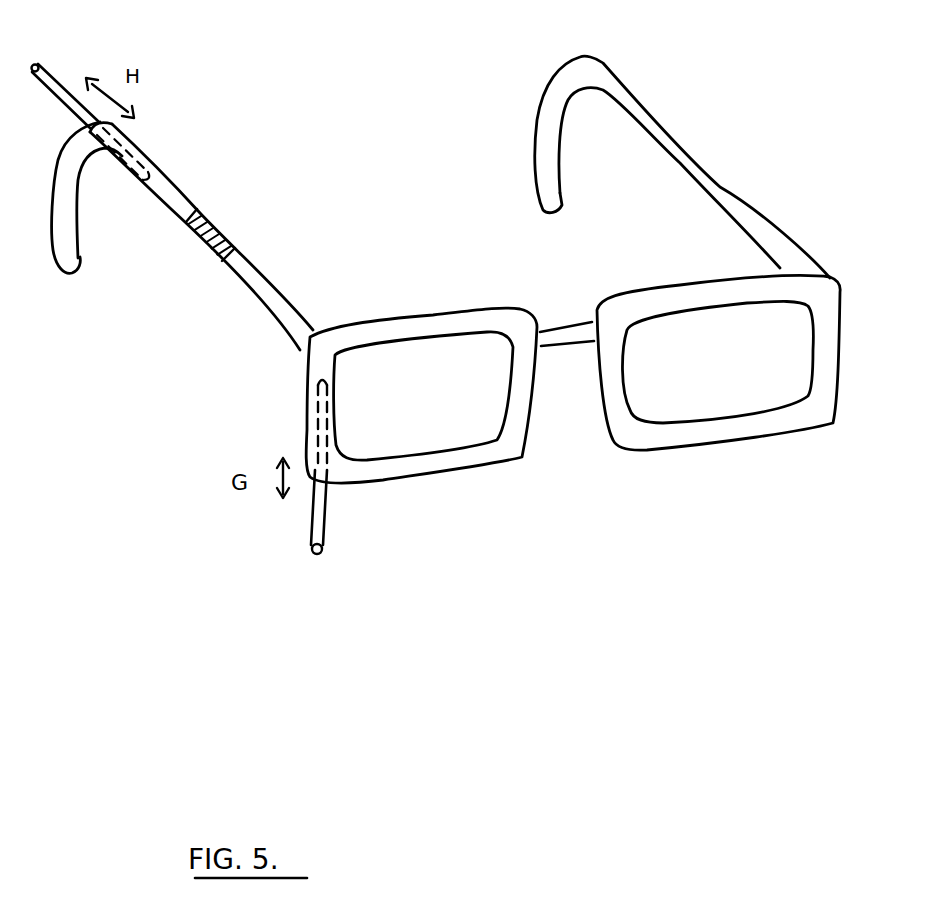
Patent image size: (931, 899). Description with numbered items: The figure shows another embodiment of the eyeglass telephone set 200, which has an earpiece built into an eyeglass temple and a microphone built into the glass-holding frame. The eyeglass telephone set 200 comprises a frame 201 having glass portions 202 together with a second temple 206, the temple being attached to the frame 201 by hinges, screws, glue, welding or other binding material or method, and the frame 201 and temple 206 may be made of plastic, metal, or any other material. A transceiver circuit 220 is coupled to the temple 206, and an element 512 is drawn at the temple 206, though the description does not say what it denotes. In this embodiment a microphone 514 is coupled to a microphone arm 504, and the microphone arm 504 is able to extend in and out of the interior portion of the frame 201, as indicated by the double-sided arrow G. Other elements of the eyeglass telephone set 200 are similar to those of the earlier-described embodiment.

The eyeglass telephone set 200 is at (787, 64).
The frame 201 is at (657, 450).
The glass portions 202 is at (53, 150).
The second temple 206 is at (180, 187).
The transceiver circuit 220 is at (220, 232).
The microphone arm 504 is at (328, 422).
The rod 512 is at (40, 60).
The microphone 514 is at (324, 549).